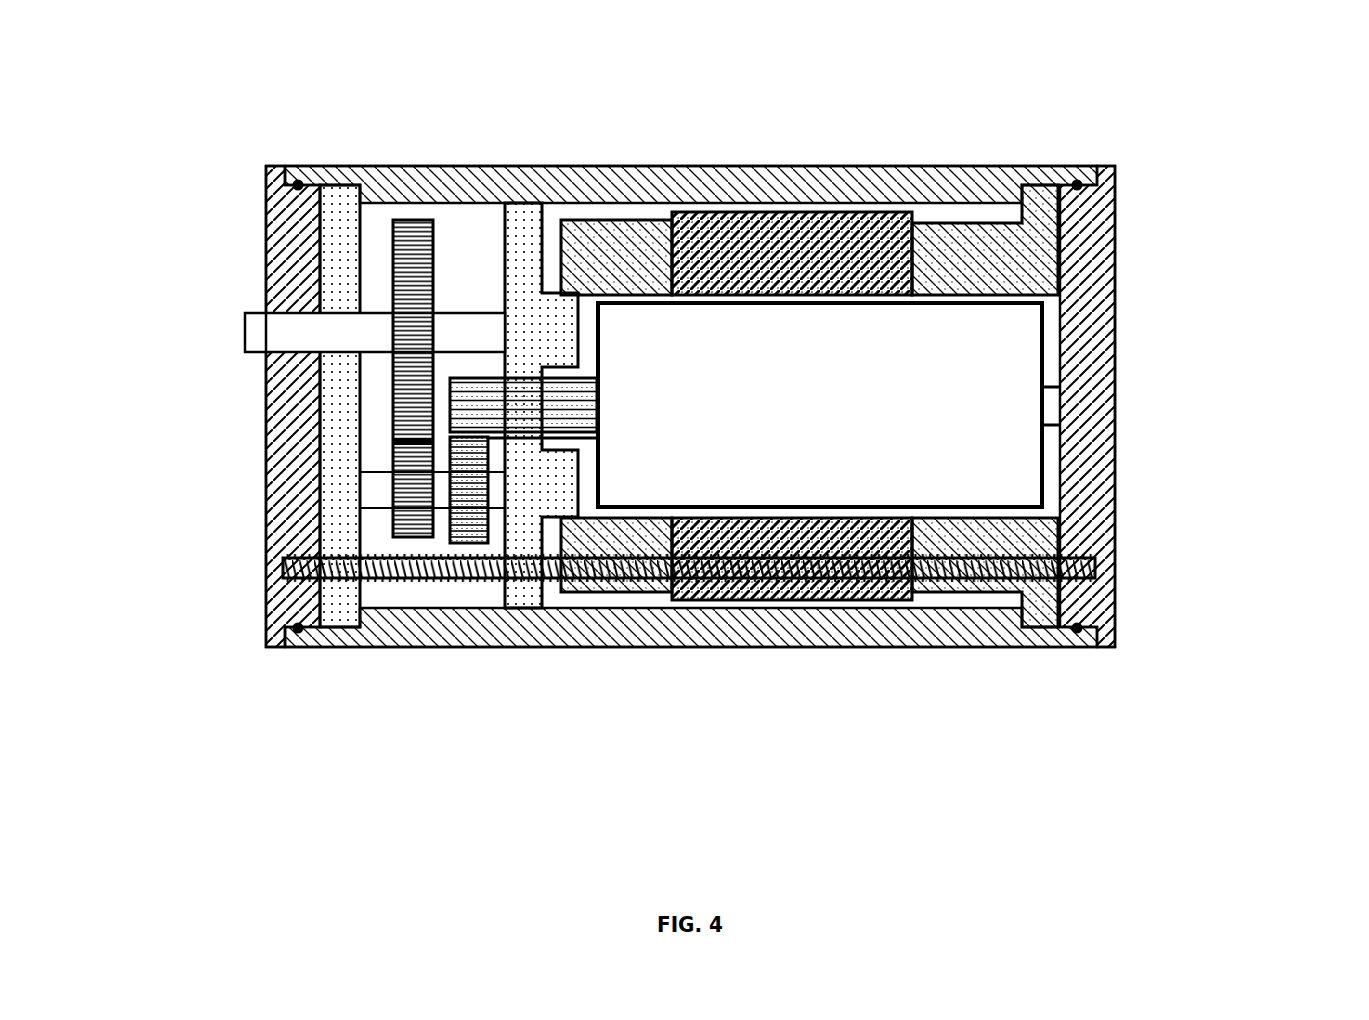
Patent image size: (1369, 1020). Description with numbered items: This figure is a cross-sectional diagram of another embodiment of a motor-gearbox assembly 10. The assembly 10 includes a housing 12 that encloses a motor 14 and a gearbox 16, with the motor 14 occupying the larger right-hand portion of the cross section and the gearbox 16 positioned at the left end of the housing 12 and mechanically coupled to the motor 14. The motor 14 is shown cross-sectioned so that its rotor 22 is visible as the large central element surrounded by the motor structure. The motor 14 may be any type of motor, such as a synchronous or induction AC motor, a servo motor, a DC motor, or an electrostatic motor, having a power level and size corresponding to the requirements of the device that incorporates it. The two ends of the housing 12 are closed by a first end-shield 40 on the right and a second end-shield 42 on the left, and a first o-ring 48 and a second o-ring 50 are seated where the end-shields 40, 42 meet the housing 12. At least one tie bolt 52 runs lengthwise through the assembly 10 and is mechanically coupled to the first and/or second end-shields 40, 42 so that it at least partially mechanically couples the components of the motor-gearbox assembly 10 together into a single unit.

The motor-gearbox assembly 10 is at (697, 426).
The housing 12 is at (505, 164).
The motor 14 is at (865, 337).
The gearbox 16 is at (430, 594).
The rotor 22 is at (862, 418).
The first end-shield 40 is at (1268, 506).
The second end-shield 42 is at (264, 518).
The first o-ring 48 is at (1088, 639).
The second o-ring 50 is at (292, 639).
The tie bolt 52 is at (833, 580).